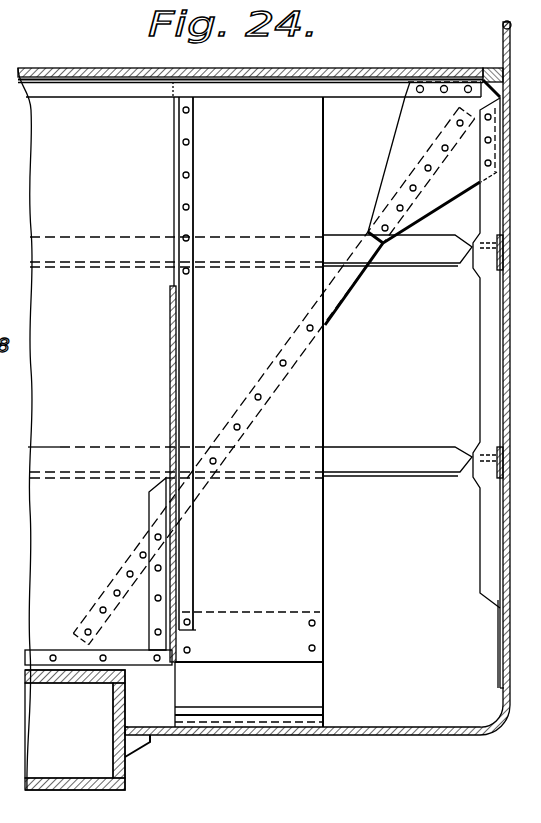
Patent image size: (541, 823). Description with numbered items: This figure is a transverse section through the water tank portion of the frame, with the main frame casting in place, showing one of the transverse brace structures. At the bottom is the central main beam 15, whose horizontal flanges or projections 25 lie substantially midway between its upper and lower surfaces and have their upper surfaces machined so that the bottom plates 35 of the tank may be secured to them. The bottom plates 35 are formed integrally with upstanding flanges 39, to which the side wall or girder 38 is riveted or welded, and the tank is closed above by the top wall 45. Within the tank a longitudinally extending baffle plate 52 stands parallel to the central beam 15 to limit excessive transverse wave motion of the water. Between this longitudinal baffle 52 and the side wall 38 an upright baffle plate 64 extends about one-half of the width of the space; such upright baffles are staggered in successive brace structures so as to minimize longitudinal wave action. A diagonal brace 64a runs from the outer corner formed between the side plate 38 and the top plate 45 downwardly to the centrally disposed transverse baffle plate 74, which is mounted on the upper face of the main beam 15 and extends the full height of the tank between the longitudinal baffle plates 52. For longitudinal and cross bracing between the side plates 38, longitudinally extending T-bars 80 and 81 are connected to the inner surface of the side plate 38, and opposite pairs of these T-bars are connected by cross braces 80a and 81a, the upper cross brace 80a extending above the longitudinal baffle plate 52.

The main beam 15 is at (125, 770).
The horizontal flanges 25 is at (150, 738).
The bottom plates 35 is at (445, 736).
The side wall 38 is at (505, 397).
The upstanding flange 39 is at (498, 650).
The top wall 45 is at (298, 70).
The longitudinal baffle plate 52 is at (170, 370).
The upright baffle plate 64 is at (313, 499).
The diagonal brace 64a is at (343, 285).
The transverse baffle plate 74 is at (128, 207).
The T-bar 80 is at (397, 266).
The cross brace 80a is at (283, 250).
The T-bar 81 is at (497, 478).
The cross brace 81a is at (397, 460).